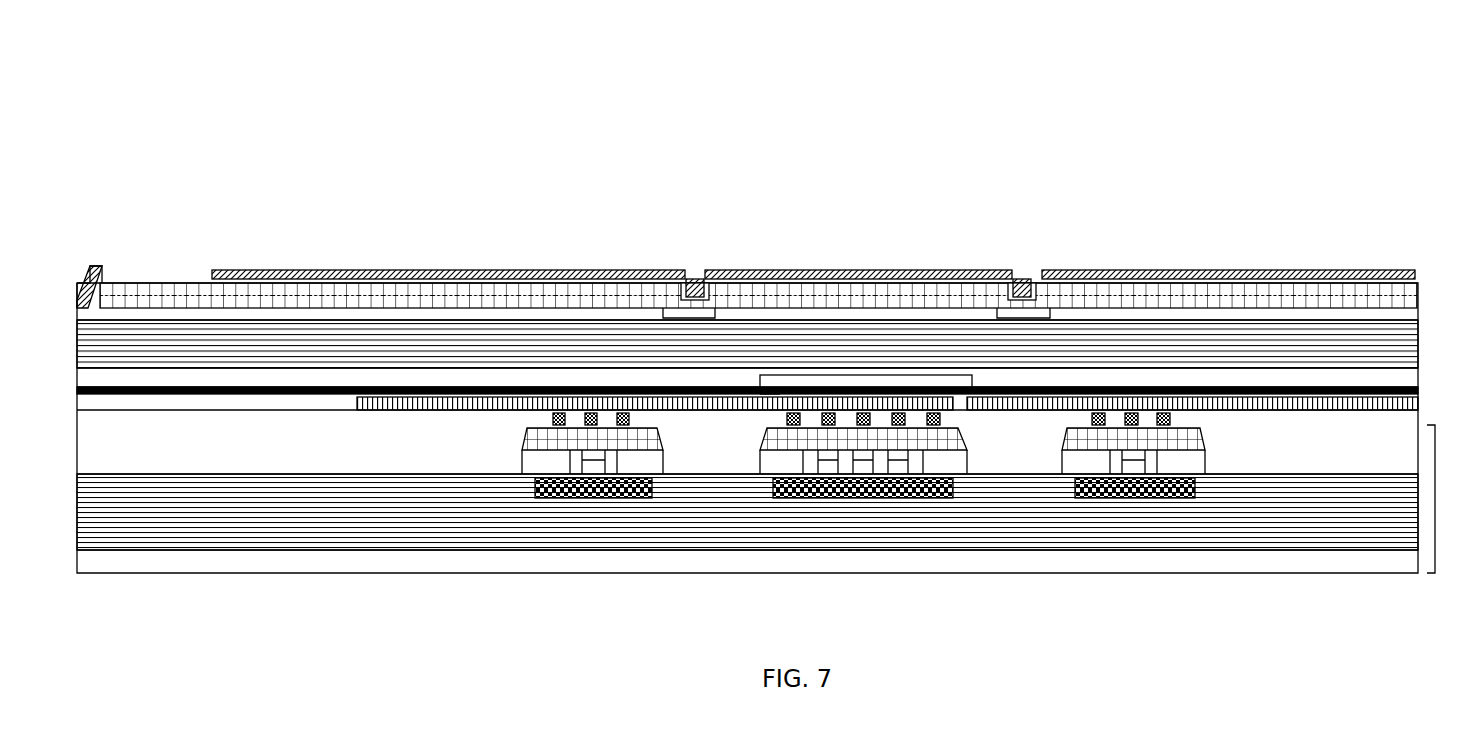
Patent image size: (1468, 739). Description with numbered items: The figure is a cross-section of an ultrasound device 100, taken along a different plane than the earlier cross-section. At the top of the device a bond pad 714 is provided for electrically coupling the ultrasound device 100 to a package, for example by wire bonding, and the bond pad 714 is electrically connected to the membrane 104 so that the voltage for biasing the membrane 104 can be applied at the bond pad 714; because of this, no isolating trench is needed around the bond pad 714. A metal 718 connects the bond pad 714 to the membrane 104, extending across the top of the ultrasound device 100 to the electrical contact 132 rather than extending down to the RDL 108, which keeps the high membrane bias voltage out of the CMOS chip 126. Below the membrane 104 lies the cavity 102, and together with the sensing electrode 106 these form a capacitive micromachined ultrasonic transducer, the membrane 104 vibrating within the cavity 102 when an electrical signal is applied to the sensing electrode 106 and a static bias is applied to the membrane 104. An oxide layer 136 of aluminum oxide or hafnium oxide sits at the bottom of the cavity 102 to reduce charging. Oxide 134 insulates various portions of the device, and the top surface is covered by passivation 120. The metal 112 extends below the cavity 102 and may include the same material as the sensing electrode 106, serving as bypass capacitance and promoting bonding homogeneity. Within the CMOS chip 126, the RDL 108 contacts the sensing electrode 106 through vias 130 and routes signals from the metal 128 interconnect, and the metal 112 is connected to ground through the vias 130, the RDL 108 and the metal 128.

The ultrasound device 100 is at (217, 142).
The cavity 102 is at (880, 376).
The membrane 104 is at (812, 338).
The sensing electrode 106 is at (925, 402).
The redistribution layer (RDL) 108 is at (530, 445).
The metal 112 is at (625, 400).
The passivation 120 is at (343, 268).
The CMOS chip 126 is at (1440, 500).
The metal 128 is at (625, 495).
The vias 130 is at (928, 455).
The contacts 132 is at (705, 313).
The oxide 134 is at (367, 433).
The oxide layer 136 is at (770, 396).
The bond pad 714 is at (154, 281).
The metal 718 is at (298, 292).